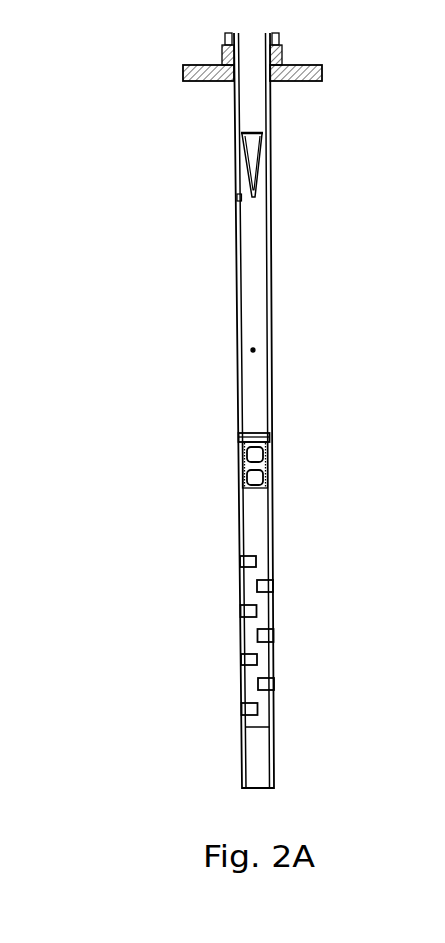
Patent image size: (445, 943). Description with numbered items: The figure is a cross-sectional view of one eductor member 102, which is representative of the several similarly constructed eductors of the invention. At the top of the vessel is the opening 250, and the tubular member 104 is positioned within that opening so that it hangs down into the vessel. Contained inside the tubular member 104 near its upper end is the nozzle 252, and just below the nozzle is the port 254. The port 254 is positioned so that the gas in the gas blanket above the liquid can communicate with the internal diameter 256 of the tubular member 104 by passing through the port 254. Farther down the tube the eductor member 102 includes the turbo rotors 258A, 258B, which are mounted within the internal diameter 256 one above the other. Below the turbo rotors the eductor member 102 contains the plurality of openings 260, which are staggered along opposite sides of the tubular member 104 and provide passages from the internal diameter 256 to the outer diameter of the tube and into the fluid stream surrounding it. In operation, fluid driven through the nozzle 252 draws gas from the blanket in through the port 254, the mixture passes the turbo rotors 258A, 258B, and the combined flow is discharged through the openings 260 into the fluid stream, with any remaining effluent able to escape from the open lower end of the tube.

The eductor member 102 is at (323, 410).
The tubular member 104 is at (277, 319).
The opening 250 is at (227, 67).
The nozzle 252 is at (263, 168).
The port 254 is at (235, 203).
The internal diameter 256 is at (253, 350).
The turbo rotor 258A is at (237, 448).
The turbo rotor 258B is at (237, 483).
The plurality of openings 260 is at (237, 562).